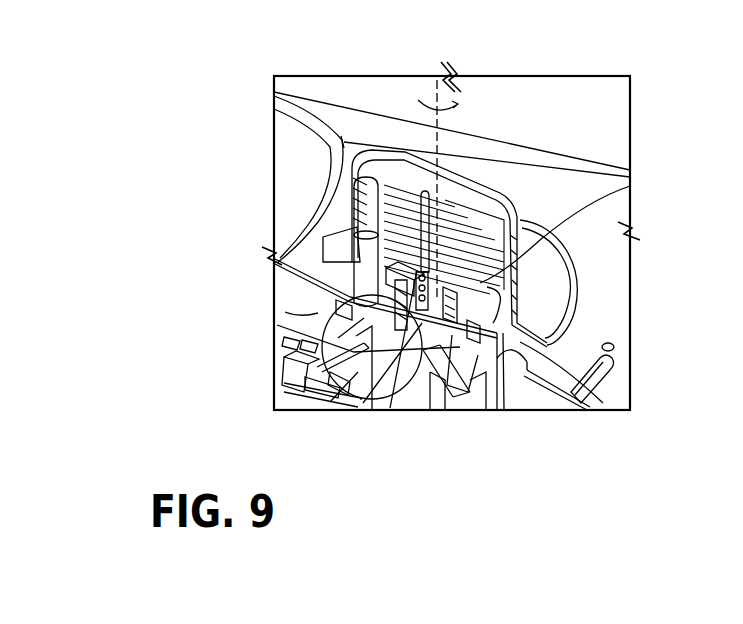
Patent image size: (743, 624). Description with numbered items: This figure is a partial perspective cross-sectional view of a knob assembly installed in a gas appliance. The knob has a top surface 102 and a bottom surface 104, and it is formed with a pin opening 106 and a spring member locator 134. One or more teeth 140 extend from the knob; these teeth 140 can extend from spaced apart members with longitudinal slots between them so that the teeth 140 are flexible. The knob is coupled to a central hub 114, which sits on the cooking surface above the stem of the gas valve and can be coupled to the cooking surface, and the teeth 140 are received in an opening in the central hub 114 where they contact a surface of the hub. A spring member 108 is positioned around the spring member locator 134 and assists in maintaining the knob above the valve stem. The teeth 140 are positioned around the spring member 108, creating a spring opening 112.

The top surface 102 is at (492, 195).
The spring member locator 134 is at (630, 186).
The pin opening 106 is at (352, 272).
The teeth 140 is at (335, 318).
The spring opening 112 is at (372, 362).
The spring member 108 is at (407, 312).
The central hub 114 is at (497, 333).
The bottom surface 104 is at (547, 343).